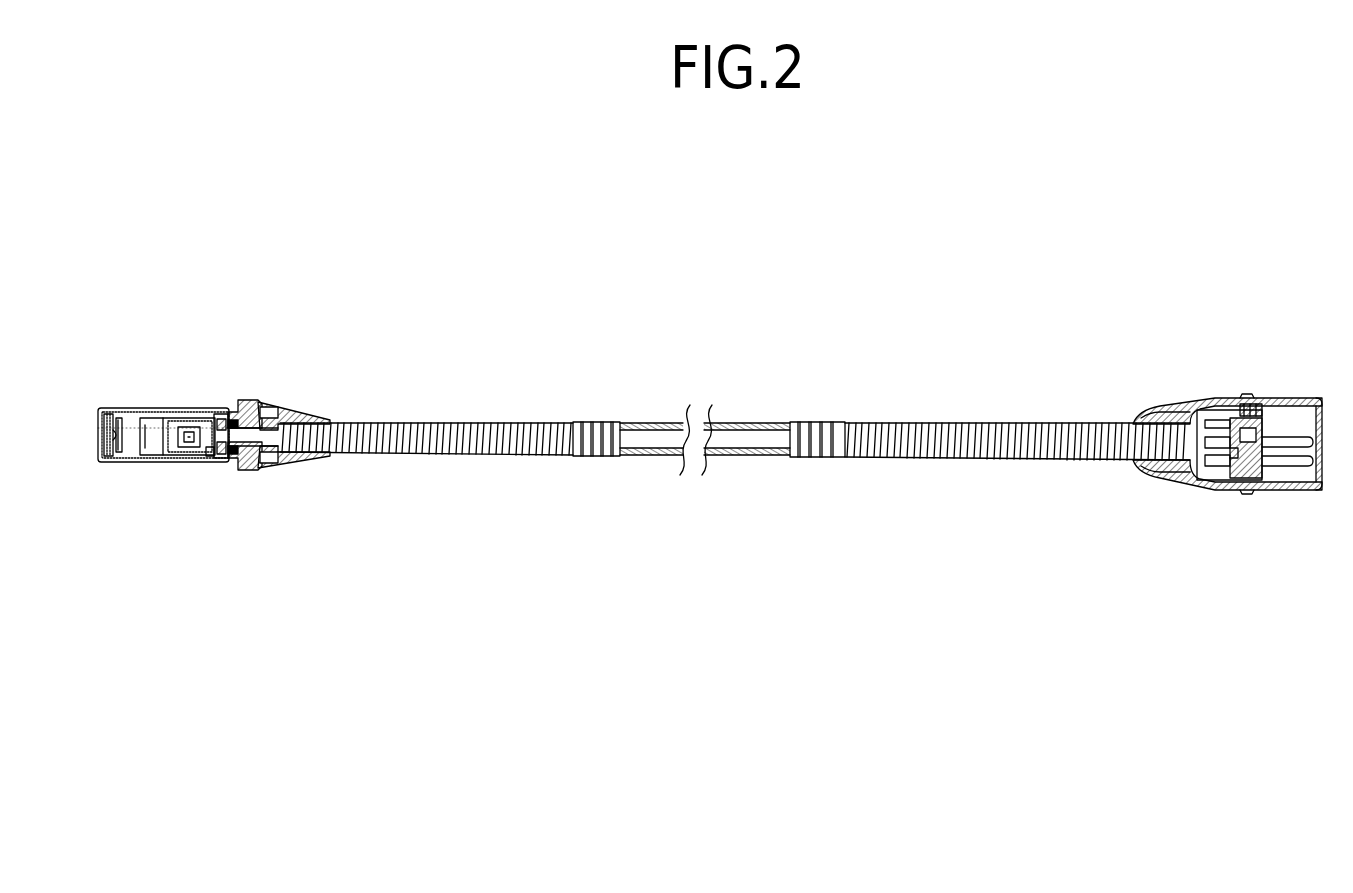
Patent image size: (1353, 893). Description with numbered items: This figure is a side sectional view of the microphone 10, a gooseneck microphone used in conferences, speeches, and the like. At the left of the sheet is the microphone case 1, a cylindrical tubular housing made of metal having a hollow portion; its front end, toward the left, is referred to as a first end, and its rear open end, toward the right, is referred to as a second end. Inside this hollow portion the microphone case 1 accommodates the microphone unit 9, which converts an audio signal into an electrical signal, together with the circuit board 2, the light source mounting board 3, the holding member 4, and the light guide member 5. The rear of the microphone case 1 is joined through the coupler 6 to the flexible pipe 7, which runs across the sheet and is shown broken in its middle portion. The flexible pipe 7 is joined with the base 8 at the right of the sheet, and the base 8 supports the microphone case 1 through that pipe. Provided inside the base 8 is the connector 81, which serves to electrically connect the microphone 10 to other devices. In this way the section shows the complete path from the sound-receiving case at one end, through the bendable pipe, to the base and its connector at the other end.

The microphone 10 is at (748, 240).
The microphone case 1 is at (127, 408).
The microphone unit 9 is at (105, 407).
The circuit board 2 is at (163, 418).
The holding member 4 is at (222, 418).
The light source mounting board 3 is at (220, 462).
The light guide member 5 is at (246, 408).
The coupler 6 is at (290, 420).
The flexible pipe 7 is at (507, 423).
The base 8 is at (1200, 381).
The connector 81 is at (1262, 406).